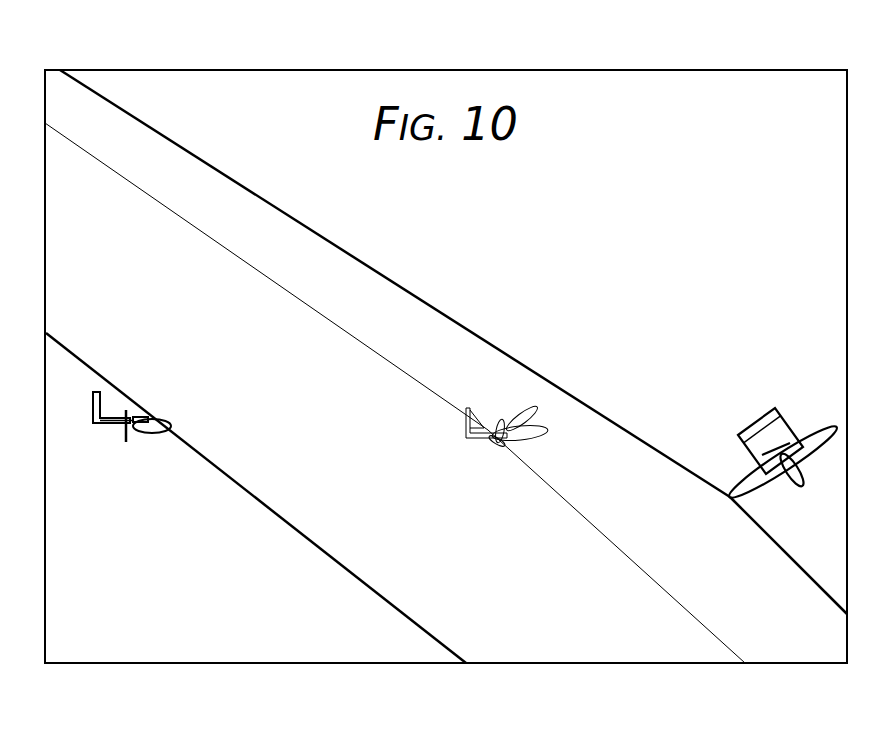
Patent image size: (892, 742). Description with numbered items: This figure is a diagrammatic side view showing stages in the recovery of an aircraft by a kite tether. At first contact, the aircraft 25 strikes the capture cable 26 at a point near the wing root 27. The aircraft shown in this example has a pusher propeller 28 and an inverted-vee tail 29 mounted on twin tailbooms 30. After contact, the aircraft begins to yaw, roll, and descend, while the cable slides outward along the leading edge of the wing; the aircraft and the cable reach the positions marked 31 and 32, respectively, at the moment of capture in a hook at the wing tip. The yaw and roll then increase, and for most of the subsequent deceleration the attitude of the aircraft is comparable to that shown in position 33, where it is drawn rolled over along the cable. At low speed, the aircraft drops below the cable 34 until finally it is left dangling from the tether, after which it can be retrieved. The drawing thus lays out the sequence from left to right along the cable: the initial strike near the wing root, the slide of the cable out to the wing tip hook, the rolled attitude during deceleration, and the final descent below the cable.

The aircraft 25 is at (150, 419).
The capture cable 26 is at (188, 437).
The wing root 27 is at (157, 415).
The pusher propeller 28 is at (122, 443).
The inverted-vee tail 29 is at (83, 398).
The twin tailbooms 30 is at (117, 413).
The aircraft position at capture 31 is at (540, 443).
The cable position at capture 32 is at (435, 393).
The aircraft position during deceleration 33 is at (817, 425).
The cable 34 is at (752, 532).